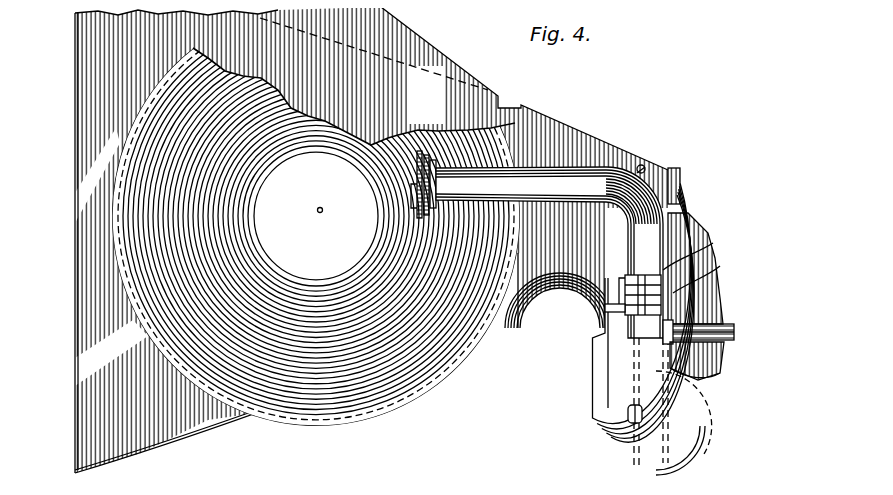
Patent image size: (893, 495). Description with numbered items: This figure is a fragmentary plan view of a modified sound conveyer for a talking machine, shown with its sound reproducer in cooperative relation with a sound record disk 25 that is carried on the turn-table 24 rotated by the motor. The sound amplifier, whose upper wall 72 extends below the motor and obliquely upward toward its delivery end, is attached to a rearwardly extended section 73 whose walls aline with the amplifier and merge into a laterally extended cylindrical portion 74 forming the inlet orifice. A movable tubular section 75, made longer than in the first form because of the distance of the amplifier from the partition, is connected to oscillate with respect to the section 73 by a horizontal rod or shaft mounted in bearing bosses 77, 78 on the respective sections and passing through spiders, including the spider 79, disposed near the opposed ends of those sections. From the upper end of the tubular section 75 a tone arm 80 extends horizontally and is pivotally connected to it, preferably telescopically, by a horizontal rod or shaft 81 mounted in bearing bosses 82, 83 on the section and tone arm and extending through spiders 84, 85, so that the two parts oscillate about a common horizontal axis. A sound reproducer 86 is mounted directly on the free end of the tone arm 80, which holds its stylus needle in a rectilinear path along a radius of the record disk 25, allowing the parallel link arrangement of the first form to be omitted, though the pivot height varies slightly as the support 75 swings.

The turn-table 24 is at (470, 60).
The sound record disk 25 is at (440, 346).
The upper wall 72 is at (92, 378).
The rearwardly extended section 73 is at (560, 291).
The laterally extended cylindrical portion 74 is at (727, 325).
The movable tubular section 75 is at (706, 416).
The bearing boss 77 is at (674, 176).
The bearing boss 78 is at (690, 297).
The spider 79 is at (720, 356).
The tone arm 80 is at (558, 163).
The horizontal rod or shaft 81 is at (627, 300).
The bearing boss 82 is at (618, 410).
The bearing boss 83 is at (633, 157).
The spider 84 is at (668, 283).
The spider 85 is at (657, 262).
The sound reproducer 86 is at (410, 160).